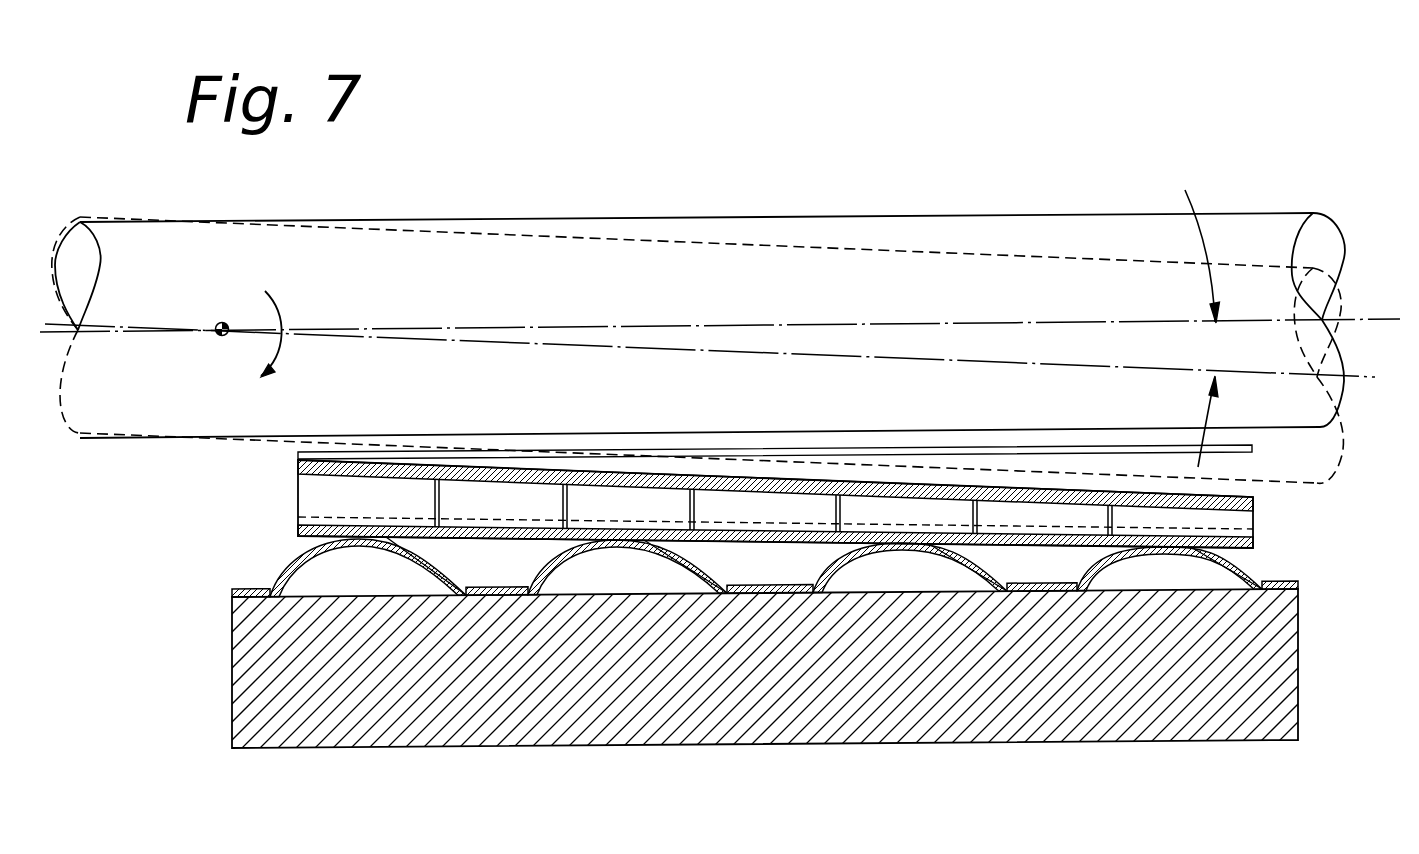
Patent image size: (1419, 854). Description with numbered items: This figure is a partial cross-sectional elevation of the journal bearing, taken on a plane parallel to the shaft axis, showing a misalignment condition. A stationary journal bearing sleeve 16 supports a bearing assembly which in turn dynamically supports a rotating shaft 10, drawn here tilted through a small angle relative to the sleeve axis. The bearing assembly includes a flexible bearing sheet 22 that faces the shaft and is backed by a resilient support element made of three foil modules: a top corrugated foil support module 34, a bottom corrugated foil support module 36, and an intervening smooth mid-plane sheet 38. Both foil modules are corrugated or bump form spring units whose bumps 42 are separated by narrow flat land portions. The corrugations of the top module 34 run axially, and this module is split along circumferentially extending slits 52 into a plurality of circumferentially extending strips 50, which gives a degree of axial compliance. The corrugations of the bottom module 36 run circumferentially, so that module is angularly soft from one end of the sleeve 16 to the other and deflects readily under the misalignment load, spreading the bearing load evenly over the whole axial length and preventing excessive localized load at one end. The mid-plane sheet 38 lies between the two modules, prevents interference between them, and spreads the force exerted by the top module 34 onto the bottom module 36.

The rotating shaft 10 is at (1053, 215).
The stationary journal bearing sleeve 16 is at (316, 749).
The flexible bearing sheet 22 is at (1245, 497).
The top corrugated foil support module 34 is at (732, 524).
The bottom corrugated foil support module 36 is at (283, 572).
The mid-plane sheet 38 is at (493, 537).
The bumps 42 is at (395, 545).
The circumferentially extending strips 50 is at (385, 511).
The circumferentially extending slits 52 is at (693, 508).